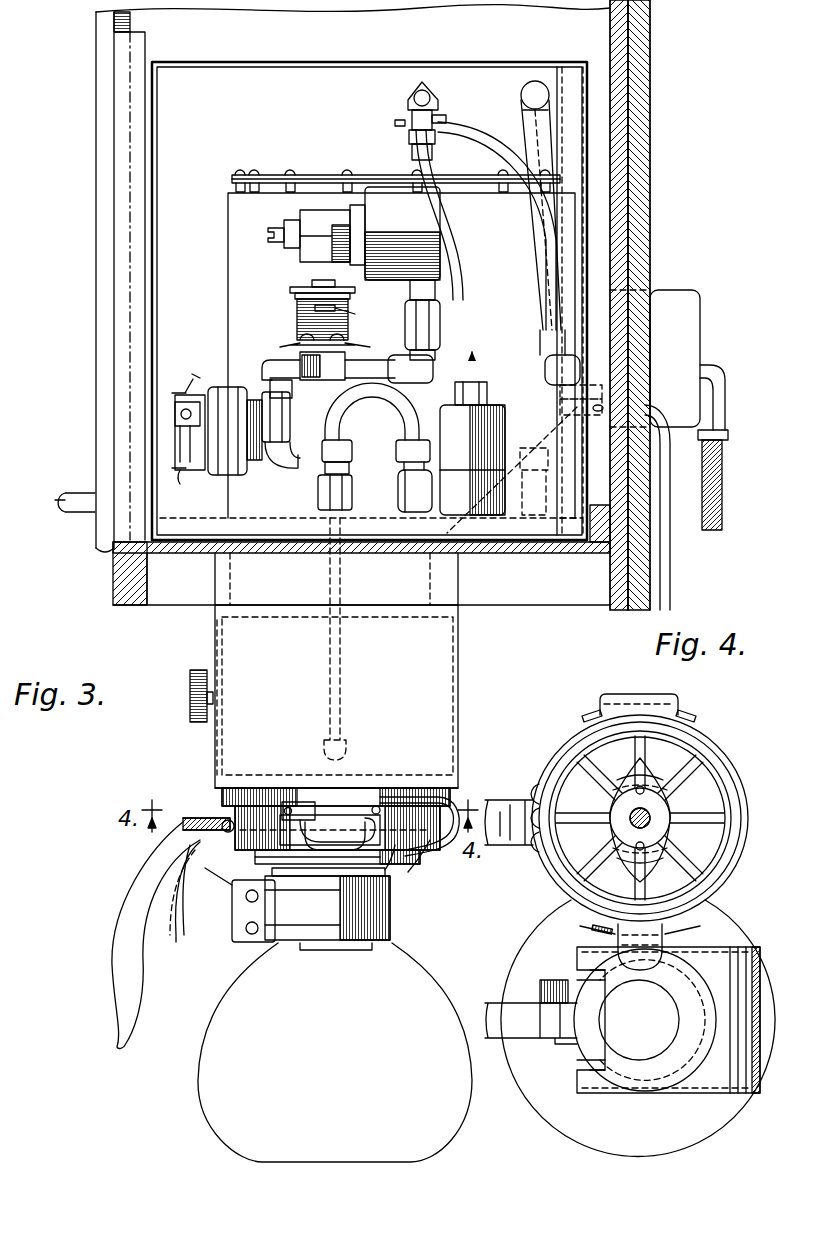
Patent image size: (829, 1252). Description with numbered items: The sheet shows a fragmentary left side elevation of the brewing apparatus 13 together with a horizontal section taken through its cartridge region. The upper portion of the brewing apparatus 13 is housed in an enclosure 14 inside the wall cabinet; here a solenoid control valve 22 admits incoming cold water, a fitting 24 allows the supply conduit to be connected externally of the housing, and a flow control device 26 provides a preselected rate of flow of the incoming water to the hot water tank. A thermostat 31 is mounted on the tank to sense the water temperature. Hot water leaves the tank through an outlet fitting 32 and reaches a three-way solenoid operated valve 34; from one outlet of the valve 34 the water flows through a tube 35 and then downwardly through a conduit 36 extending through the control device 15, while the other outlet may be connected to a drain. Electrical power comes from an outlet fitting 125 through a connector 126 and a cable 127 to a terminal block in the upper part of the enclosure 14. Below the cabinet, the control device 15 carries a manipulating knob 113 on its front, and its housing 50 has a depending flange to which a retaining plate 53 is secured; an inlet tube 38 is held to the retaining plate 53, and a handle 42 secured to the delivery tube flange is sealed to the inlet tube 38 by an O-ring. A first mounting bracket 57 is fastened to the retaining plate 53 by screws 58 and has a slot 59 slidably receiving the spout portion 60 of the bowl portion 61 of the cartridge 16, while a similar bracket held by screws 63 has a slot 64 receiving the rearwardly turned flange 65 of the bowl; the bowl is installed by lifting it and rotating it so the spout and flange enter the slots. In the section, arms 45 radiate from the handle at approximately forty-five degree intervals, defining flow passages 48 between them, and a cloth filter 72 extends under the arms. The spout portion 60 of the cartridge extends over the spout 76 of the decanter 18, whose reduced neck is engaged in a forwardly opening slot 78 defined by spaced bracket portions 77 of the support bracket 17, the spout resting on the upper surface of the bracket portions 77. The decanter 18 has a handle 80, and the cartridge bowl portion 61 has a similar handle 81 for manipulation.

In FIG. 3, the brewing apparatus 13 is at (668, 104).
In FIG. 3, the enclosure 14 is at (306, 64).
In FIG. 3, the fitting 24 is at (420, 85).
In FIG. 3, the outlet fitting 32 is at (442, 120).
In FIG. 3, the flow control device 26 is at (378, 190).
In FIG. 3, the cable 127 is at (548, 216).
In FIG. 3, the outlet fitting 125 is at (688, 292).
In FIG. 3, the connector 126 is at (556, 370).
In FIG. 3, the solenoid control valve 22 is at (292, 316).
In FIG. 3, the thermostat 31 is at (212, 392).
In FIG. 3, the tube 35 is at (406, 418).
In FIG. 3, the three-way solenoid operated valve 34 is at (500, 422).
In FIG. 3, the manipulating knob 113 is at (196, 672).
In FIG. 3, the conduit 36 is at (344, 686).
In FIG. 3, the control device 15 is at (432, 702).
In FIG. 3, the housing 50 is at (460, 745).
In FIG. 3, the retaining plate 53 is at (452, 797).
In FIG. 3, the screws 58 is at (296, 803).
In FIG. 3, the slot 59 is at (322, 835).
In FIG. 4, the slot 59 is at (574, 930).
In FIG. 3, the first mounting bracket 57 is at (352, 808).
In FIG. 4, the first mounting bracket 57 is at (706, 936).
In FIG. 3, the handle 81 is at (205, 820).
In FIG. 4, the handle 81 is at (508, 842).
In FIG. 3, the support bracket 17 is at (444, 866).
In FIG. 4, the support bracket 17 is at (740, 1094).
In FIG. 3, the spout portion 60 is at (330, 842).
In FIG. 4, the spout portion 60 is at (606, 940).
In FIG. 3, the cartridge 16 is at (398, 906).
In FIG. 3, the bowl portion 61 is at (240, 890).
In FIG. 4, the bowl portion 61 is at (698, 744).
In FIG. 3, the handle 80 is at (150, 915).
In FIG. 4, the handle 80 is at (518, 1030).
In FIG. 3, the decanter 18 is at (420, 988).
In FIG. 4, the decanter 18 is at (686, 1138).
In FIG. 4, the rearwardly turned flange 65 is at (618, 697).
In FIG. 4, the screws 63 is at (586, 712).
In FIG. 4, the slot 64 is at (690, 712).
In FIG. 4, the cloth filter 72 is at (606, 766).
In FIG. 4, the arms 45 is at (686, 776).
In FIG. 4, the flow passages 48 is at (702, 816).
In FIG. 4, the inlet tube 38 is at (630, 818).
In FIG. 4, the handle 42 is at (664, 836).
In FIG. 4, the spout 76 is at (596, 1052).
In FIG. 4, the slot 78 is at (582, 1064).
In FIG. 4, the bracket portions 77 is at (604, 1086).